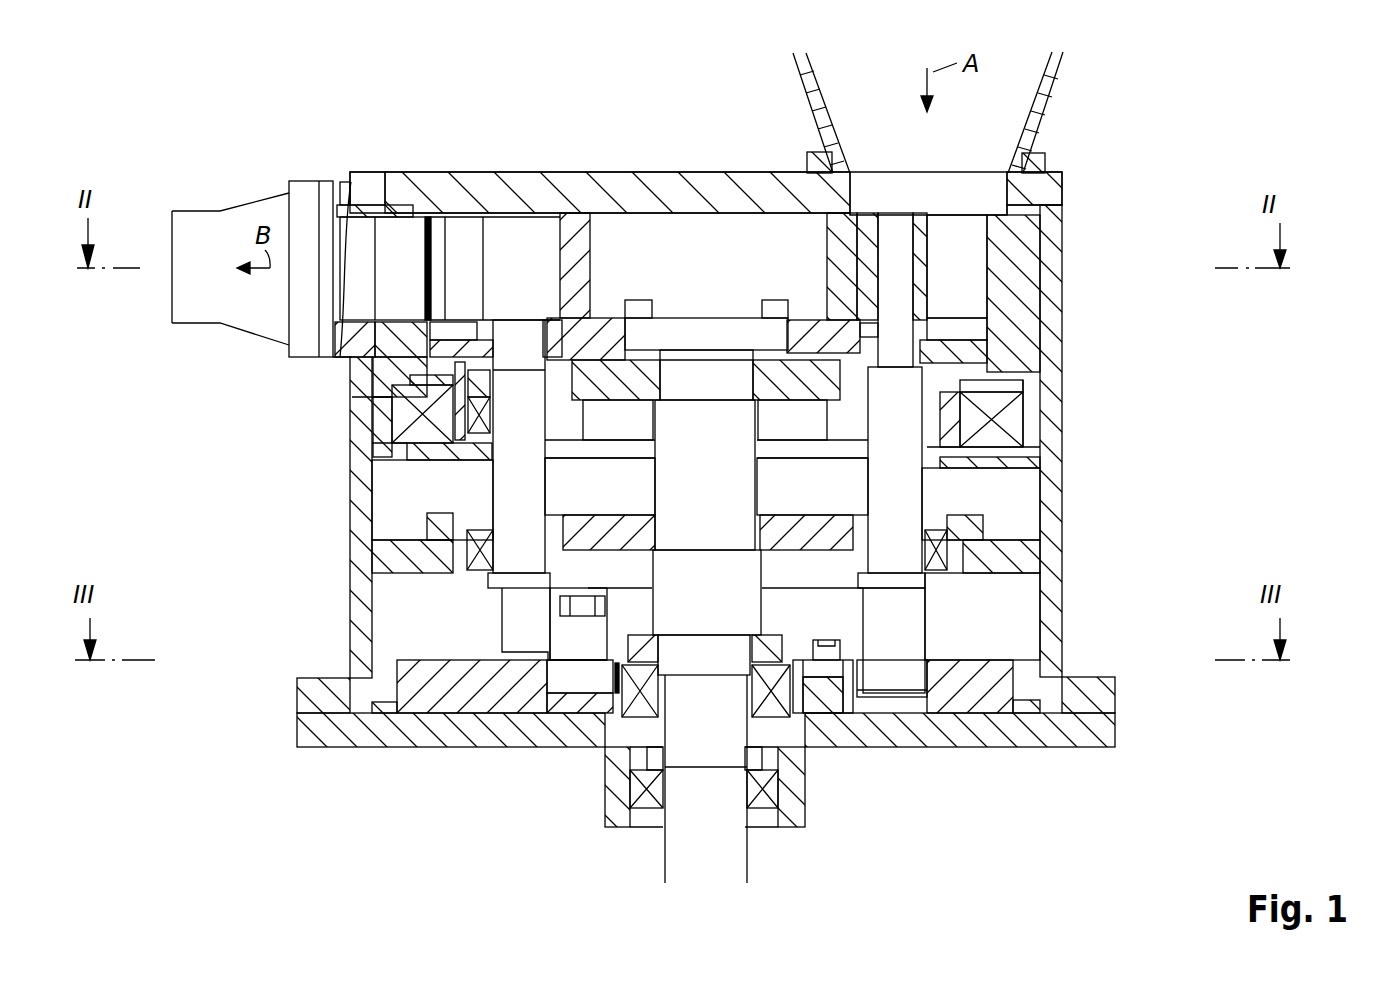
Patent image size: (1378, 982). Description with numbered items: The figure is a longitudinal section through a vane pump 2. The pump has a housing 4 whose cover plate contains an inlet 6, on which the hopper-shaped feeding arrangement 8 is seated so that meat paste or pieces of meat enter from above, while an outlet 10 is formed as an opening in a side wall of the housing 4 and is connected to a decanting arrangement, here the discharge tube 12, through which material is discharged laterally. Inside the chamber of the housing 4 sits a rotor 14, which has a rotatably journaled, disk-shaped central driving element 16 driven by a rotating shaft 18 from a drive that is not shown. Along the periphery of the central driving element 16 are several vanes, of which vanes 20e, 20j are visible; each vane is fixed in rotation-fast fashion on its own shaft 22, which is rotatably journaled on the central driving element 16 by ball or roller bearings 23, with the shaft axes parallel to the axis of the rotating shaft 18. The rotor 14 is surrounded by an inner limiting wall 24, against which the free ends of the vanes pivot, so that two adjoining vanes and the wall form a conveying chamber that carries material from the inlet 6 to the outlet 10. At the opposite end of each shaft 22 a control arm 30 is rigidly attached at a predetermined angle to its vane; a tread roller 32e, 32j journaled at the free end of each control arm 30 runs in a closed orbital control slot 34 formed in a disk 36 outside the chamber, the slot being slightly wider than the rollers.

The vane pump 2 is at (730, 112).
The housing 4 is at (1050, 442).
The inlet 6 is at (967, 193).
The hopper-shaped feeding arrangement 8 is at (1055, 83).
The outlet 10 is at (407, 247).
The discharge tube 12 is at (181, 228).
The rotor 14 is at (648, 232).
The central driving element 16 is at (592, 235).
The rotating shaft 18 is at (725, 853).
The vane 20e is at (962, 283).
The vane 20j is at (512, 233).
The shaft 22 is at (530, 487).
The ball or roller bearings 23 is at (467, 407).
The inner limiting wall 24 is at (992, 240).
The control arm 30 is at (517, 617).
The tread roller 32e is at (908, 678).
The tread roller 32j is at (582, 675).
The control slot 34 is at (592, 695).
The disk 36 is at (502, 692).